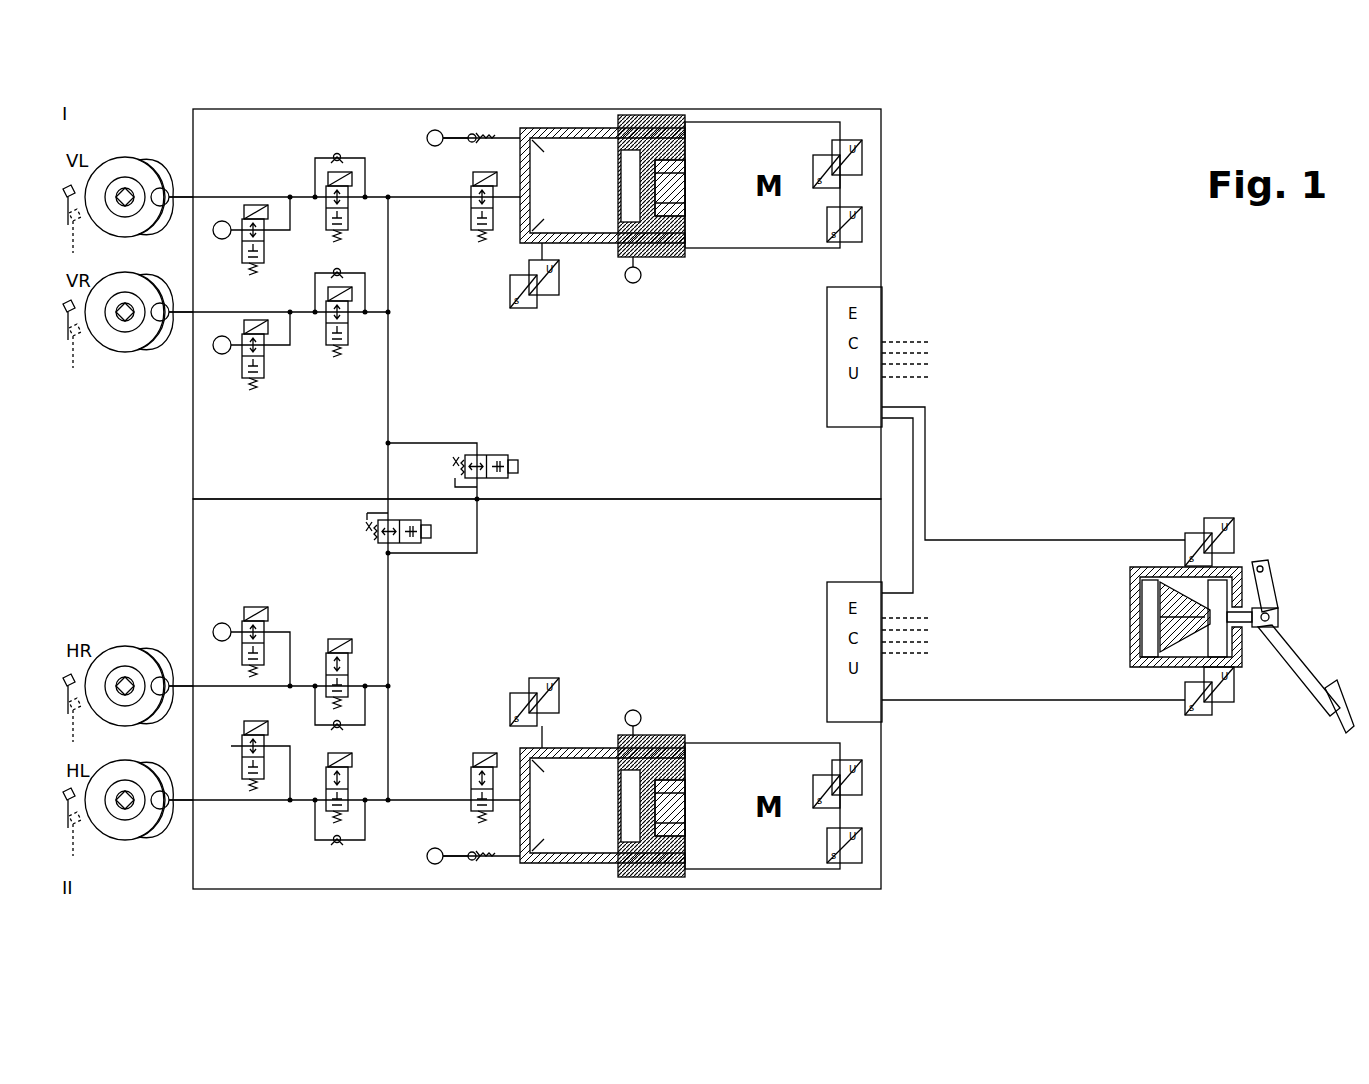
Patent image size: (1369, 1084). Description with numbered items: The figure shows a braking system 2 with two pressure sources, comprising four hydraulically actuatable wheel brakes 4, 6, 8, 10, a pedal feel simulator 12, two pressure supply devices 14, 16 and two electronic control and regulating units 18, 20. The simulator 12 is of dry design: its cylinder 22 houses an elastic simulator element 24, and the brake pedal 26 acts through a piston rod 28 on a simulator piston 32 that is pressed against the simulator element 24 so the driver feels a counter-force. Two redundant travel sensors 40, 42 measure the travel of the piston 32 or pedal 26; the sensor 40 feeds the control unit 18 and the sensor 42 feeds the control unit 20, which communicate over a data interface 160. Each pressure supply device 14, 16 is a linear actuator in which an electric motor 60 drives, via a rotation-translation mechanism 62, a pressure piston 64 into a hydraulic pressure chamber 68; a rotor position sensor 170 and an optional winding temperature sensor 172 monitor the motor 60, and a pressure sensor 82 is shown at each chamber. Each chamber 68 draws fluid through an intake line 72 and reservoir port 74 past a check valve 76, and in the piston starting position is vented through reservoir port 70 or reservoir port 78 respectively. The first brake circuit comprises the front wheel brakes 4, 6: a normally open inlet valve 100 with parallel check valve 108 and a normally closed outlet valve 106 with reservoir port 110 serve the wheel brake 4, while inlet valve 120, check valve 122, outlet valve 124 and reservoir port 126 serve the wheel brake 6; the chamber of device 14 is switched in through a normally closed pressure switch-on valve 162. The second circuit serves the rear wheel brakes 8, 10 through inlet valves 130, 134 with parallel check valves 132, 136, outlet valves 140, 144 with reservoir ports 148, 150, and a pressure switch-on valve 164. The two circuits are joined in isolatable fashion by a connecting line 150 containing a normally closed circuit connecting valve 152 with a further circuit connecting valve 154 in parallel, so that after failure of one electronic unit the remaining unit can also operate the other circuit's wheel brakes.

The braking system 2 is at (1085, 168).
The wheel brake 4 is at (158, 172).
The wheel brake 6 is at (158, 333).
The wheel brake 8 is at (158, 664).
The wheel brake 10 is at (160, 820).
The pedal feel simulator 12 is at (1187, 611).
The pressure supply device 14 is at (818, 107).
The pressure supply device 16 is at (818, 890).
The electronic control and regulating unit 18 is at (882, 332).
The electronic control and regulating unit 20 is at (882, 705).
The cylinder 22 is at (1172, 662).
The elastic simulator element 24 is at (1168, 588).
The brake pedal 26 is at (1310, 678).
The piston rod 28 is at (1252, 625).
The simulator piston 32 is at (1220, 590).
The travel sensor 40 is at (1210, 517).
The travel sensor 42 is at (1225, 718).
The electric motor 60 is at (752, 146).
The rotation-translation mechanism 62 is at (666, 200).
The pressure piston 64 is at (668, 146).
The hydraulic pressure chamber 68 is at (574, 146).
The reservoir port 70 is at (636, 284).
The intake line 72 is at (456, 135).
The reservoir port 74 is at (433, 129).
The check valve 76 is at (478, 132).
The reservoir port 78 is at (633, 710).
The pressure sensor 82 is at (560, 286).
The inlet valve 100 is at (349, 205).
The outlet valve 106 is at (262, 216).
The check valve 108 is at (337, 152).
The reservoir port 110 is at (222, 220).
The inlet valve 120 is at (349, 320).
The check valve 122 is at (346, 270).
The outlet valve 124 is at (262, 350).
The reservoir port 126 is at (222, 355).
The inlet valve 130 is at (349, 676).
The check valve 132 is at (346, 728).
The inlet valve 134 is at (349, 790).
The check valve 136 is at (337, 846).
The outlet valve 140 is at (262, 640).
The outlet valve 144 is at (258, 788).
The reservoir port 148 is at (222, 622).
The hydraulic connecting line 150 is at (390, 388).
The circuit connecting valve 152 is at (380, 544).
The circuit connecting valve 154 is at (497, 452).
The data interface 160 is at (920, 570).
The pressure switch-on valve 162 is at (482, 244).
The pressure switch-on valve 164 is at (482, 752).
The rotor position sensor 170 is at (862, 162).
The sensor 172 is at (862, 222).